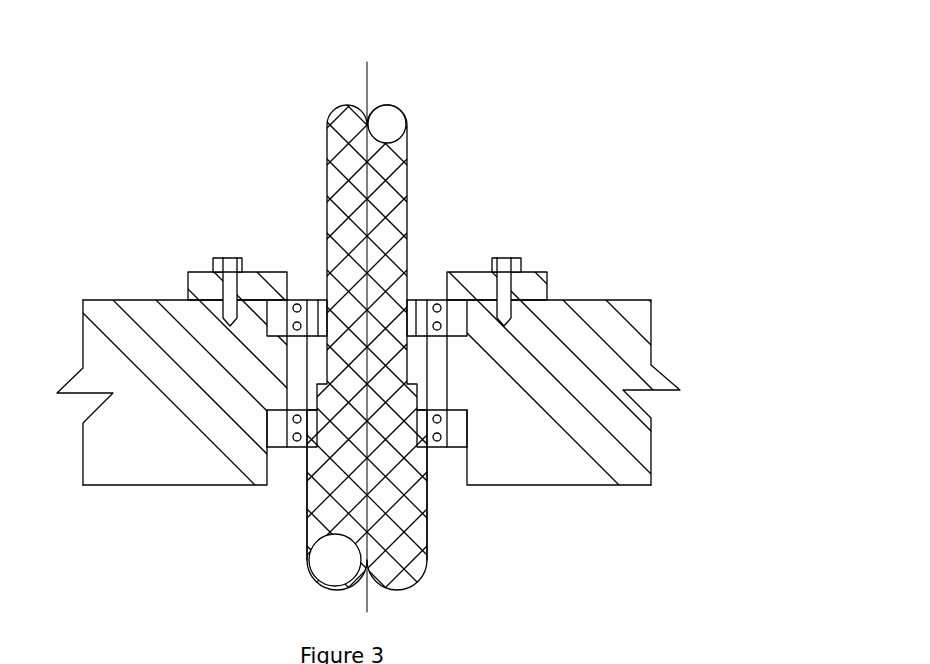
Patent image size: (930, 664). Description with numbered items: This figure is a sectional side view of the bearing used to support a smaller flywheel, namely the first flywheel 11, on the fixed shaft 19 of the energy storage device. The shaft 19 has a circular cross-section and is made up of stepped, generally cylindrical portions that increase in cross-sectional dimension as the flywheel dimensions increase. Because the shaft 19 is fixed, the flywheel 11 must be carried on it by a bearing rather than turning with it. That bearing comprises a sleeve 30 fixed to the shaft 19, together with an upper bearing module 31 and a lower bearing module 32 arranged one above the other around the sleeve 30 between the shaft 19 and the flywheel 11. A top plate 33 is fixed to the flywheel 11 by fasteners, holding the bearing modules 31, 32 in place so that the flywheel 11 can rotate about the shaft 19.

The first flywheel 11 is at (566, 301).
The shaft 19 is at (403, 95).
The sleeve 30 is at (402, 339).
The upper bearing module 31 is at (305, 288).
The lower bearing module 32 is at (454, 459).
The top plate 33 is at (469, 254).